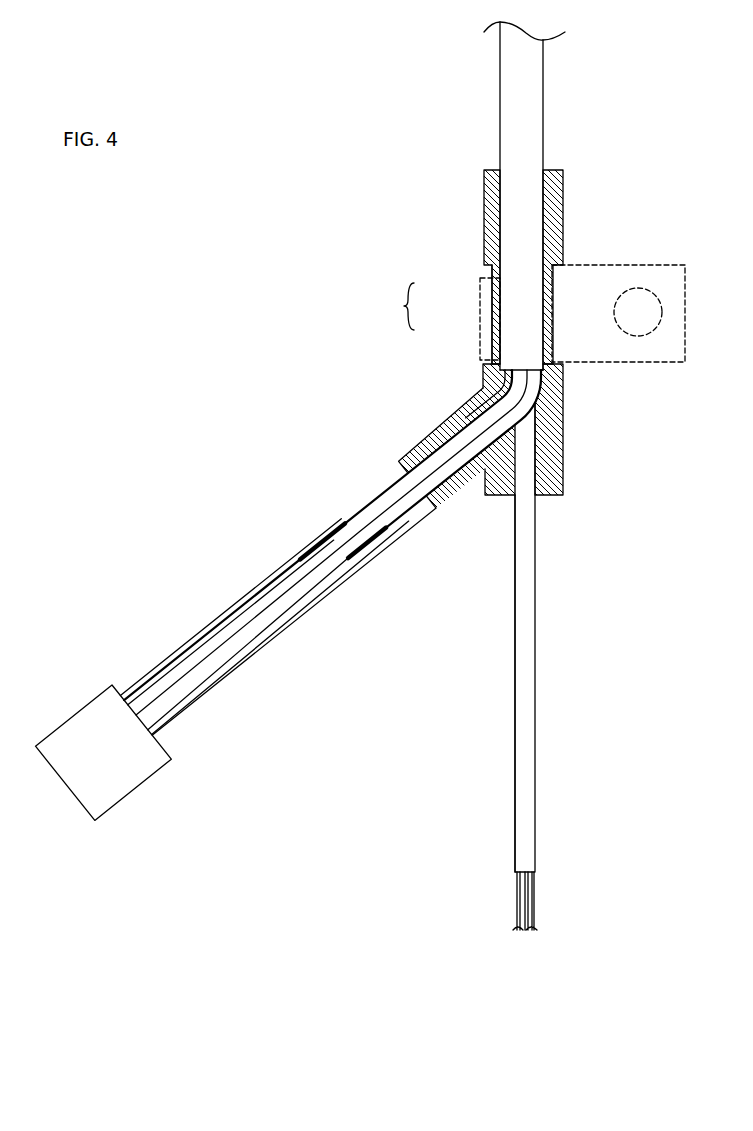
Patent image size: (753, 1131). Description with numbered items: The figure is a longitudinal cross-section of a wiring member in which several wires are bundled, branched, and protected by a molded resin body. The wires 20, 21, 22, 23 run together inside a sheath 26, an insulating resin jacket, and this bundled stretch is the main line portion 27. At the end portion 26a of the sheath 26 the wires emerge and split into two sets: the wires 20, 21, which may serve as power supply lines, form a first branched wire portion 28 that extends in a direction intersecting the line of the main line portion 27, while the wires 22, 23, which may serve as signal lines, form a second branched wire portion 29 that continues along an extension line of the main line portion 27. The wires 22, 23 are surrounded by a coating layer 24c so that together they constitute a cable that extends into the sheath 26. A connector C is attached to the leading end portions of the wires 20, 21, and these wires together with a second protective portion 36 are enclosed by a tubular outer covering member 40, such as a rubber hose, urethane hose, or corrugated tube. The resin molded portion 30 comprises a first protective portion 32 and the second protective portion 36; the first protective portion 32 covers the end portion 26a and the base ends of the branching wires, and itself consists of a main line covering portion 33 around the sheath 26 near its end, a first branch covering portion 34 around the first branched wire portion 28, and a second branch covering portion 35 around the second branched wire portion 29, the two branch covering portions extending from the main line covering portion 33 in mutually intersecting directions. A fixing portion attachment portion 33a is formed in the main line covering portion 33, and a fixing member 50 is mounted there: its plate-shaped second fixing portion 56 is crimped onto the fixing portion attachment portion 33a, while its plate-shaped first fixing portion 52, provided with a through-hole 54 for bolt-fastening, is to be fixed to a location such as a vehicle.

The wire 20 is at (377, 508).
The wire 21 is at (360, 543).
The wire 22 is at (518, 890).
The wire 23 is at (535, 888).
The coating layer 24c is at (535, 690).
The sheath 26 is at (533, 88).
The end portion of the sheath 26a is at (541, 366).
The main line portion 27 is at (500, 65).
The first branched wire portion 28 is at (398, 528).
The second branched wire portion 29 is at (515, 742).
The resin molded portion 30 is at (565, 212).
The first protective portion 32 is at (483, 378).
The main line covering portion 33 is at (488, 212).
The fixing portion attachment portion 33a is at (490, 270).
The first branch covering portion 34 is at (412, 448).
The second branch covering portion 35 is at (565, 482).
The second protective portion 36 is at (373, 548).
The outer covering member 40 is at (196, 636).
The fixing member 50 is at (397, 306).
The first fixing portion 52 is at (592, 315).
The through-hole 54 is at (642, 335).
The second fixing portion 56 is at (486, 330).
The connector C is at (125, 780).